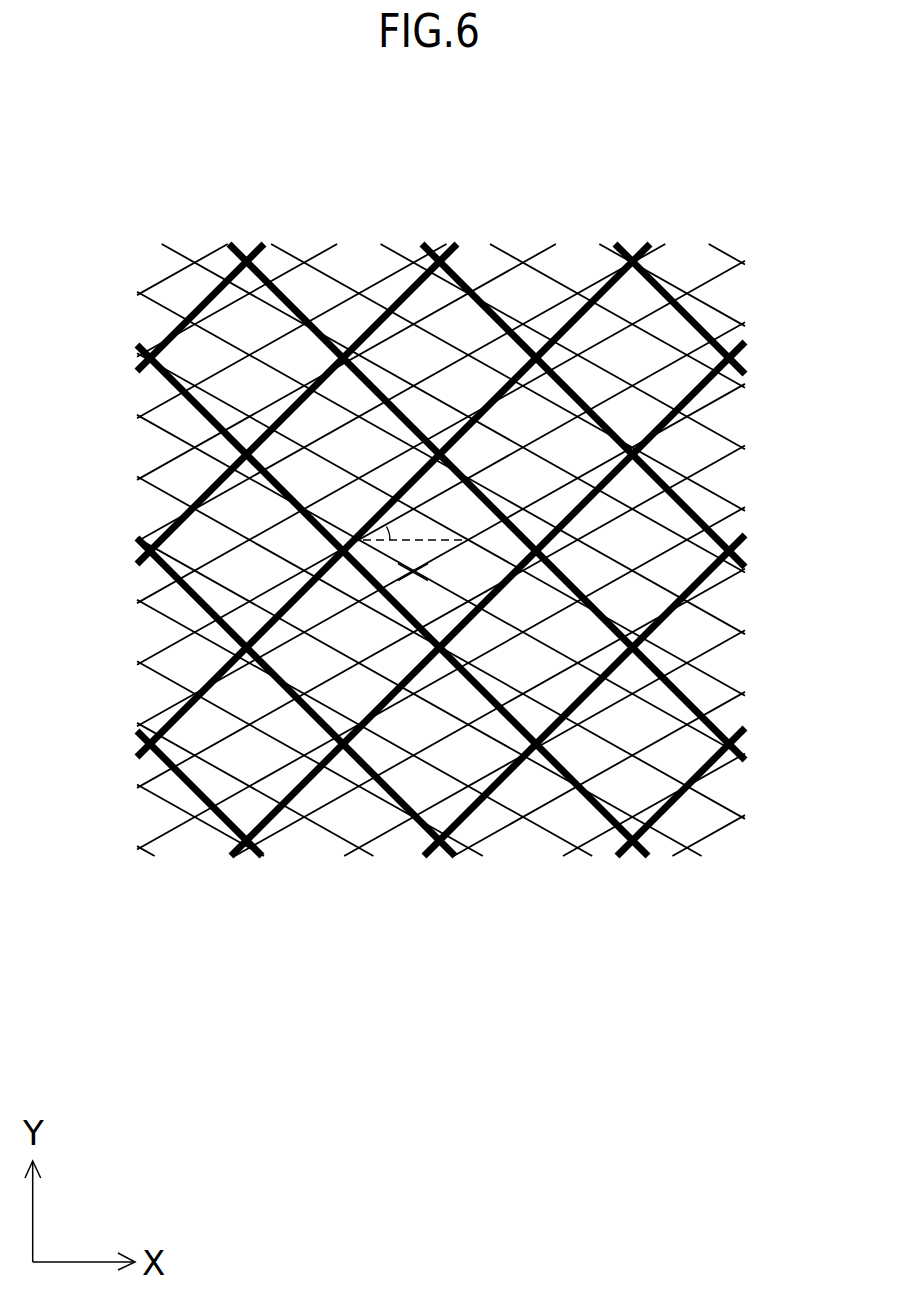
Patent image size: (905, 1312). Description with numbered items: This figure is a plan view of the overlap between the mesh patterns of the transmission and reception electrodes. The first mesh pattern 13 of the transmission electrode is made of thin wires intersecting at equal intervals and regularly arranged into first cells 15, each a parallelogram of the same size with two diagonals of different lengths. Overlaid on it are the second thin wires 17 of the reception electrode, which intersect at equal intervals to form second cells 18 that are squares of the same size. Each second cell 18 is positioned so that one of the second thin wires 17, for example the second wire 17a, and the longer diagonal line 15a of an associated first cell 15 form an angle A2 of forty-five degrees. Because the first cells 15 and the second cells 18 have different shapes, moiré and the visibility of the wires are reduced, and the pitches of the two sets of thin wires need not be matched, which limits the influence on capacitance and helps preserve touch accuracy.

The first mesh pattern 13 is at (441, 505).
The second thin wires 17 is at (441, 500).
The second wire 17a is at (648, 249).
The second cells 18 is at (458, 471).
The first cells 15 is at (441, 522).
The longer diagonal line 15a is at (414, 543).
The angle A2 is at (392, 537).